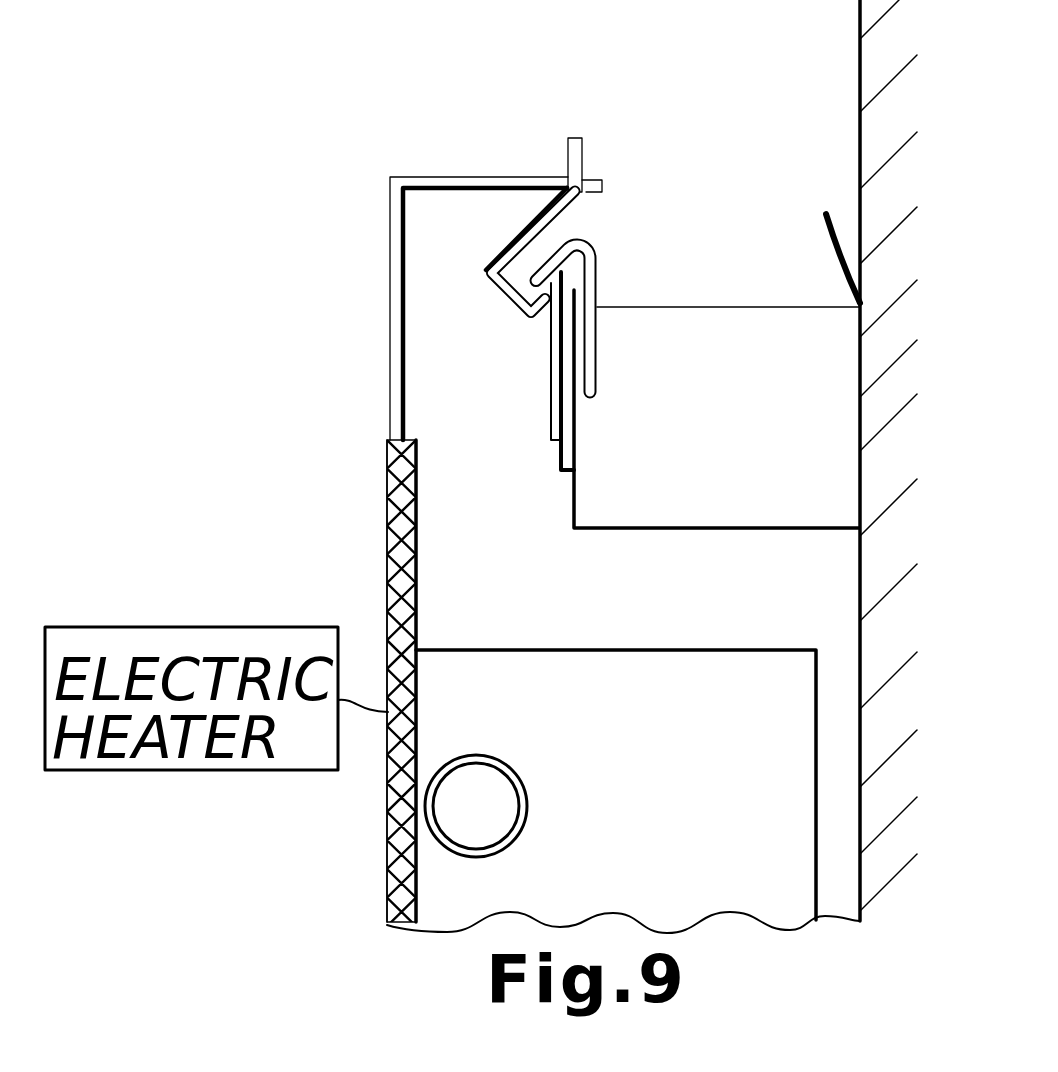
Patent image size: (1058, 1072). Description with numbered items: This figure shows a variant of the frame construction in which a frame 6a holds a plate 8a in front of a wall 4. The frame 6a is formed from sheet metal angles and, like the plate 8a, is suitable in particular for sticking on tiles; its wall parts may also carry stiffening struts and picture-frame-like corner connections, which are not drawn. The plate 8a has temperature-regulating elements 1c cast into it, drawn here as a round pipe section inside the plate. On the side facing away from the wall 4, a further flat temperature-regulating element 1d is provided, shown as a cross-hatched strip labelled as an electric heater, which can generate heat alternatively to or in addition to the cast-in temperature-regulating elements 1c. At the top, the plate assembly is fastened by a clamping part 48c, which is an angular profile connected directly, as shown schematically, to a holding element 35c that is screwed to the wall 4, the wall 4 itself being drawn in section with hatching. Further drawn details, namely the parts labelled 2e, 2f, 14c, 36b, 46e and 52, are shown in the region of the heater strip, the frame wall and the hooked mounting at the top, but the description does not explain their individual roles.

The temperature-regulating elements 1c is at (462, 778).
The flat temperature-regulating element 1d is at (386, 826).
The electric heater strip 2e is at (387, 540).
The front panel 2f is at (388, 374).
The wall 4 is at (896, 475).
The frame 6a is at (388, 250).
The plate 8a is at (560, 606).
The hanger member 14c is at (612, 251).
The holding element 35c is at (706, 289).
The mounting flange 36b is at (566, 151).
The bent engaging portion 46e is at (518, 262).
The clamping part 48c is at (522, 270).
The seal member 52 is at (832, 216).